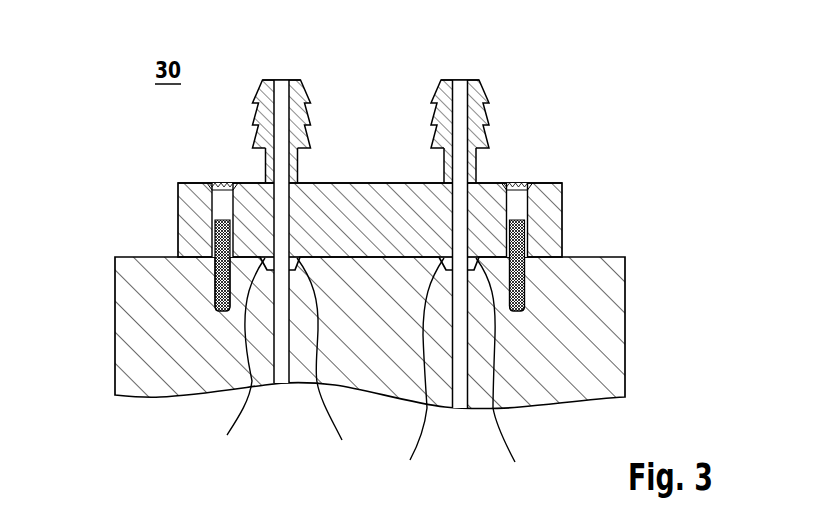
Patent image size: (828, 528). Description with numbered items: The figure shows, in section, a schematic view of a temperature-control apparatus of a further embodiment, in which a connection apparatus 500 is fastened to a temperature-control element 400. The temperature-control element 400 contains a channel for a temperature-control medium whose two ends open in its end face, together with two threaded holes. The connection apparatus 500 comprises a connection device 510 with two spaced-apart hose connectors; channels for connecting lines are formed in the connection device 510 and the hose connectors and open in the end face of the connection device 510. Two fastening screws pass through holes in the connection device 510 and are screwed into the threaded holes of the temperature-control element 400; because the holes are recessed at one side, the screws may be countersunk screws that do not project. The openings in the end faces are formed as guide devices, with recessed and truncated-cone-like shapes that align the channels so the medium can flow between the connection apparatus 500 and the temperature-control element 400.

The temperature-control element 400 is at (114, 330).
The connection apparatus 500 is at (178, 203).
The connection device 510 is at (358, 183).